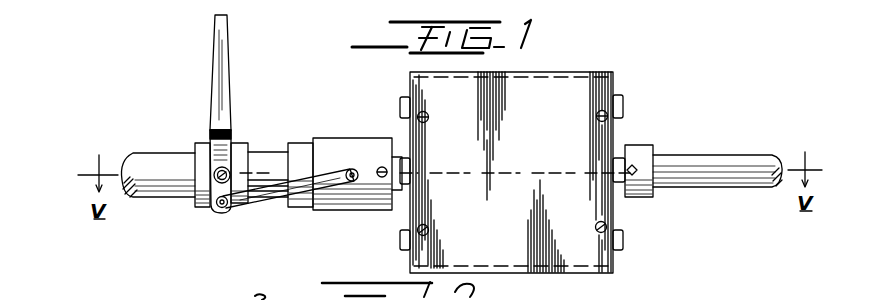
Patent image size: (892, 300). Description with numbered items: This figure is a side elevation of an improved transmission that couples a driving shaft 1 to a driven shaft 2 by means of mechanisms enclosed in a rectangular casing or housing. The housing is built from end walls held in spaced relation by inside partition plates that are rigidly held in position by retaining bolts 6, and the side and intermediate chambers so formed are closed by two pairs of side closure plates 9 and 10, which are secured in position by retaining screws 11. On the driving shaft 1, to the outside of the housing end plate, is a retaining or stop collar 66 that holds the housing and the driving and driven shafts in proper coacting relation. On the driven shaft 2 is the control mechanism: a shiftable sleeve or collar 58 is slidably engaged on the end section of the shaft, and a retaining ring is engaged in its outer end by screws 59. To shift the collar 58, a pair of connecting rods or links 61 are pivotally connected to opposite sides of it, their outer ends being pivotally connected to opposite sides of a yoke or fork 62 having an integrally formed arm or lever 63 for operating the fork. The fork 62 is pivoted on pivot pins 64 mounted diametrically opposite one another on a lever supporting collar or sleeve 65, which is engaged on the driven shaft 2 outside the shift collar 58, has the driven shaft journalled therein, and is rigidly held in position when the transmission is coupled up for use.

The driving shaft 1 is at (717, 158).
The driven shaft 2 is at (139, 165).
The retaining bolts 6 is at (618, 162).
The side closure plates 9 is at (447, 238).
The side closure plates 10 is at (410, 72).
The retaining screws 11 is at (598, 222).
The shiftable sleeve or collar 58 is at (335, 152).
The screws 59 is at (381, 167).
The connecting rods or links 61 is at (277, 197).
The yoke or fork 62 is at (226, 150).
The arm or lever 63 is at (222, 76).
The pivot pins 64 is at (206, 196).
The lever supporting collar or sleeve 65 is at (203, 150).
The retaining or stop collar 66 is at (637, 152).